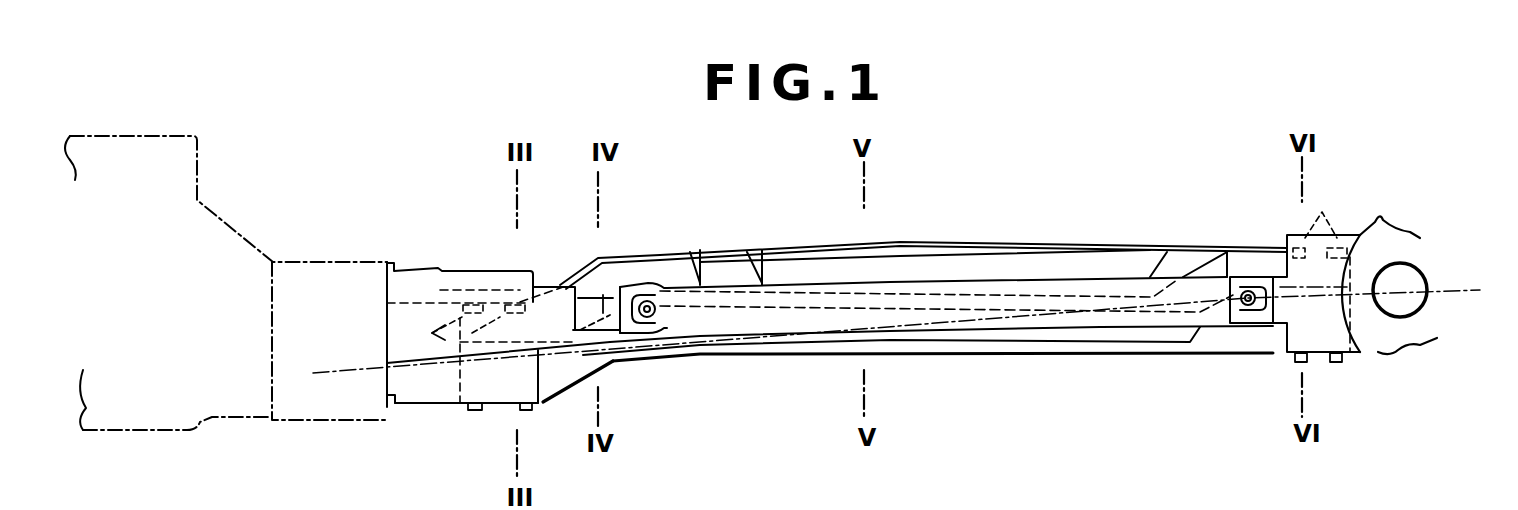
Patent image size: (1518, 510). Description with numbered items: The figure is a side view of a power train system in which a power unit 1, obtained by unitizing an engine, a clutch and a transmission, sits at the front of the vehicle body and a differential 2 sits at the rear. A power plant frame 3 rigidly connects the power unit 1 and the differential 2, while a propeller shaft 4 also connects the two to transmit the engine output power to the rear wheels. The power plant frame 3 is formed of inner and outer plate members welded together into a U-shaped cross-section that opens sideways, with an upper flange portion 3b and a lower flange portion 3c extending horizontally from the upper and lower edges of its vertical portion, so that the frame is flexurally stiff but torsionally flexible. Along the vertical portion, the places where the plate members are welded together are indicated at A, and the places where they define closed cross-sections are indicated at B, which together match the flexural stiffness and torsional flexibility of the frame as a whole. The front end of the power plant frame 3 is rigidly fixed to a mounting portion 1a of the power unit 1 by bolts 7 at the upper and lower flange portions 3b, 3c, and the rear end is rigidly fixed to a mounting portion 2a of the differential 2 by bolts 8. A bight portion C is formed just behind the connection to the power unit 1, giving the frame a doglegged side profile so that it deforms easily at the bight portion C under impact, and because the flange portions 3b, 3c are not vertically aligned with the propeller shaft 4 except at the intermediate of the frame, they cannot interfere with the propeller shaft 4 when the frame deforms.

The power unit 1 is at (412, 259).
The mounting portion 1a is at (500, 393).
The differential 2 is at (1407, 340).
The mounting portion 2a is at (1287, 337).
The power plant frame 3 is at (1019, 246).
The upper flange portion 3b is at (642, 257).
The lower flange portion 3c is at (840, 352).
The propeller shaft 4 is at (1133, 332).
The bolts 7 is at (540, 463).
The bolts 8 is at (1330, 382).
The welded portions A is at (675, 270).
The closed cross-section portions B is at (557, 377).
The bight portion C is at (592, 257).